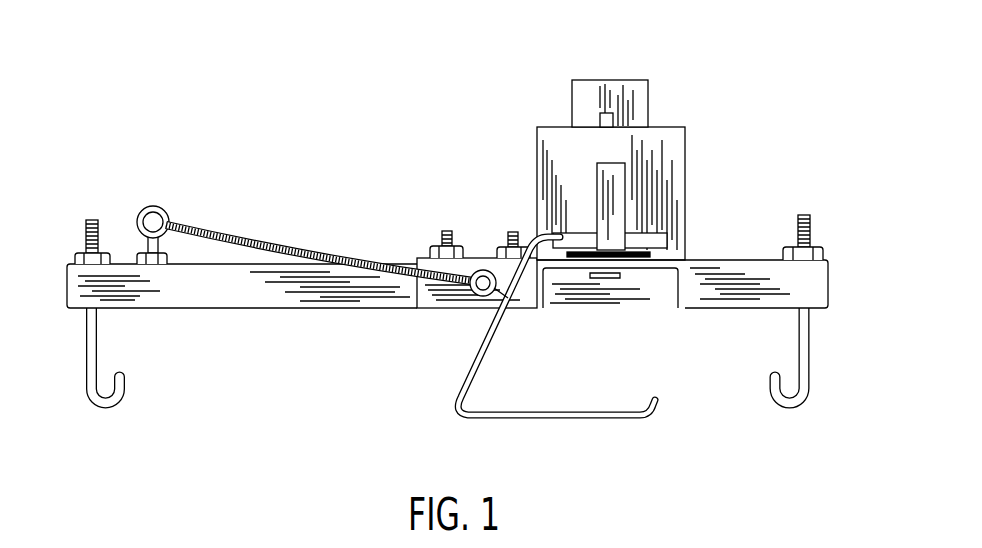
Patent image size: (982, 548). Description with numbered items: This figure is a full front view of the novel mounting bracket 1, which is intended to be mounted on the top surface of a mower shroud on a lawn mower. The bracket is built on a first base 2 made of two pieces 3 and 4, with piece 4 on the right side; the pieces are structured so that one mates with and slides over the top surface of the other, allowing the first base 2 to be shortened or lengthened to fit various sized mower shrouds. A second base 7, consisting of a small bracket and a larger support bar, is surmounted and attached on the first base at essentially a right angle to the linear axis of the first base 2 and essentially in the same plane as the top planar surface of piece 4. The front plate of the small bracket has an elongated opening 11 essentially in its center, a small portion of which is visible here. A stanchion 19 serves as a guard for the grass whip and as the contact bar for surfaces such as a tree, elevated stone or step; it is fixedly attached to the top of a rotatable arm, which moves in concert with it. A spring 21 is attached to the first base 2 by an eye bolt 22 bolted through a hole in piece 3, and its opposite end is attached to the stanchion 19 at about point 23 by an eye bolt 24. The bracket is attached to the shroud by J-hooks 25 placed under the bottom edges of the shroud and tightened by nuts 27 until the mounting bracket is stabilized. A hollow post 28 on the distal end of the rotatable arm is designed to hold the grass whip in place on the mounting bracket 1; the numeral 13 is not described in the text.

The mounting bracket 1 is at (746, 93).
The first base 2 is at (262, 330).
The piece 3 is at (90, 282).
The piece 4 is at (802, 285).
The second base 7 is at (672, 160).
The elongated opening 11 is at (612, 117).
The housing 13 is at (553, 147).
The stanchion 19 is at (462, 413).
The spring 21 is at (248, 238).
The eye bolt 22 is at (152, 205).
The point 23 is at (513, 305).
The eye bolt 24 is at (475, 308).
The J-hooks 25 is at (82, 370).
The nuts 27 is at (85, 253).
The hollow post 28 is at (618, 200).